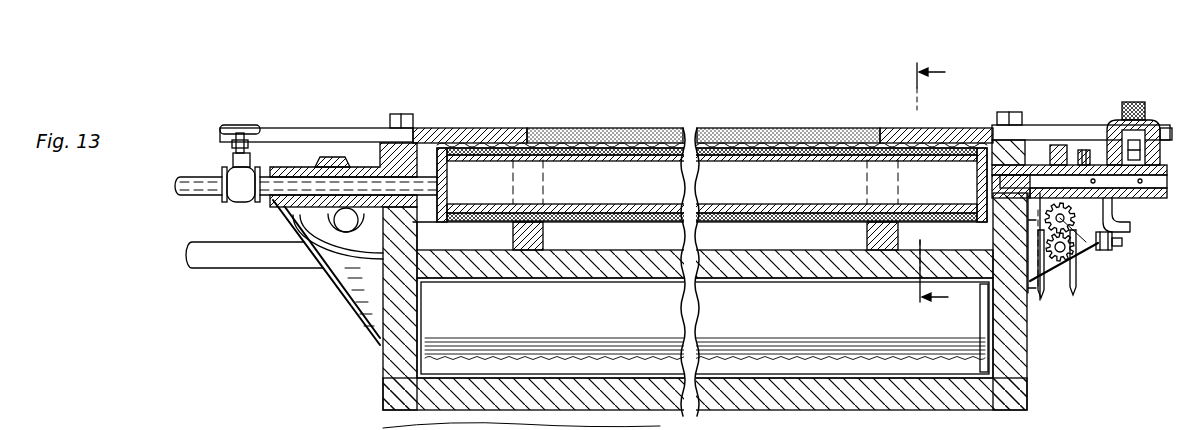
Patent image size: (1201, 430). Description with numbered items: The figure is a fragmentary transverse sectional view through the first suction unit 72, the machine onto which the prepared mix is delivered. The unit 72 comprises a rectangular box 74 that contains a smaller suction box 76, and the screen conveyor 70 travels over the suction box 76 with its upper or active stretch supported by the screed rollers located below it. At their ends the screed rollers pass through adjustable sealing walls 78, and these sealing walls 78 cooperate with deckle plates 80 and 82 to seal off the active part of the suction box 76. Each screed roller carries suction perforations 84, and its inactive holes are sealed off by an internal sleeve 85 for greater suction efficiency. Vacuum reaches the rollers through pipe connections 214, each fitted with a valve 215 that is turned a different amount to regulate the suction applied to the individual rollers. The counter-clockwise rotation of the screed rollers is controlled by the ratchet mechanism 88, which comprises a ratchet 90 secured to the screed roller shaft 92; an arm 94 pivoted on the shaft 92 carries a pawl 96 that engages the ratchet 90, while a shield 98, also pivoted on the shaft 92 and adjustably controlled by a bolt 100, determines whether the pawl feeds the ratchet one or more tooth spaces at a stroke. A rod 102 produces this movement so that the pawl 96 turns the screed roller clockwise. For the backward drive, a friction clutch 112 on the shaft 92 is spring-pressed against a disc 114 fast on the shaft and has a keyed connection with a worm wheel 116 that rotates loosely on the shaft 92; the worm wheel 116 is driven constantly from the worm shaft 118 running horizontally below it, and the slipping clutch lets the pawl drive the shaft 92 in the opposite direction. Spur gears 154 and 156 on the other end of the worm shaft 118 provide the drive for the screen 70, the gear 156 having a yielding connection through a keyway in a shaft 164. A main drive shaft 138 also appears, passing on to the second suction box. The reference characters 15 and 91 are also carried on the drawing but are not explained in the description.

The section line 15- 15 is at (949, 186).
The screen conveyor 70 is at (768, 132).
The suction unit 72 is at (381, 400).
The rectangular box 74 is at (392, 370).
The suction box 76 is at (768, 262).
The sealing walls 78 is at (548, 235).
The deckle plate 80 is at (988, 133).
The deckle plate 82 is at (313, 128).
The suction perforations 84 is at (487, 128).
The internal sleeve 85 is at (733, 202).
The ratchet mechanism 88 is at (1110, 84).
The ratchet 90 is at (1135, 210).
The insulating liner 91 is at (609, 198).
The screed roller shaft 92 is at (1167, 181).
The arm 94 is at (1158, 157).
The pawl 96 is at (1150, 112).
The shield 98 is at (1170, 150).
The bolt 100 is at (1120, 242).
The rod 102 is at (1137, 100).
The friction clutch 112 is at (1060, 143).
The disc 114 is at (1085, 147).
The worm wheel 116 is at (1070, 150).
The worm shaft 118 is at (1067, 223).
The main drive shaft 138 is at (238, 268).
The spur gear 154 is at (1073, 238).
The spur gear 156 is at (1077, 257).
The shaft 164 is at (1058, 262).
The pipe connections 214 is at (208, 177).
The valves 215 is at (233, 203).